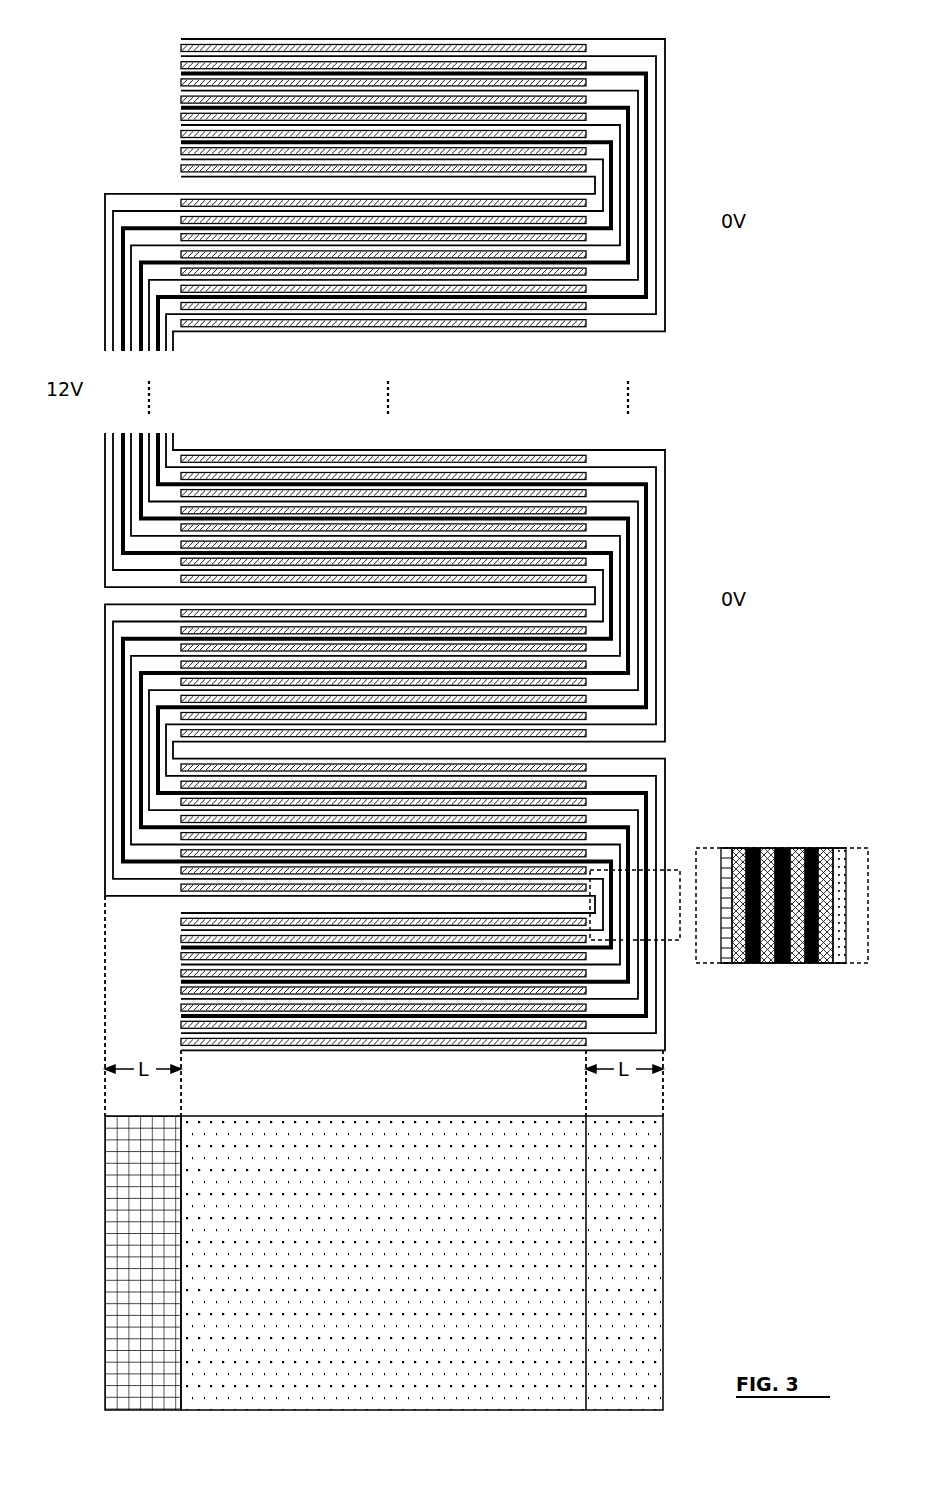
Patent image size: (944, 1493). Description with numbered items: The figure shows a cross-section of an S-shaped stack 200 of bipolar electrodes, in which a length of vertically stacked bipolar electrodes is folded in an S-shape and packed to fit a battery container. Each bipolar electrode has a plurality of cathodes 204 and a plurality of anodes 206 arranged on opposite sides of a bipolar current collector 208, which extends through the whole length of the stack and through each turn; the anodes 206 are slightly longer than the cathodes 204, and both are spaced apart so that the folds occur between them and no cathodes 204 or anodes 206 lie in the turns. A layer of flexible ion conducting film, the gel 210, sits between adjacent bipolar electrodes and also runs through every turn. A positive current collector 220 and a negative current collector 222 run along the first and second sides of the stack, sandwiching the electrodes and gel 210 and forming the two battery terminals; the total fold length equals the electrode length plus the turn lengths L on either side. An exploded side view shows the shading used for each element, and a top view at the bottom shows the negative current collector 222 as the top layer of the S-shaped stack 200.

The S-shaped stack 200 is at (797, 94).
The cathodes 204 is at (173, 92).
The anodes 206 is at (173, 127).
The bipolar current collector 208 is at (640, 178).
The flexible ion conducting film 210 is at (646, 128).
The positive current collector 220 is at (124, 184).
The negative current collector 222 is at (657, 74).